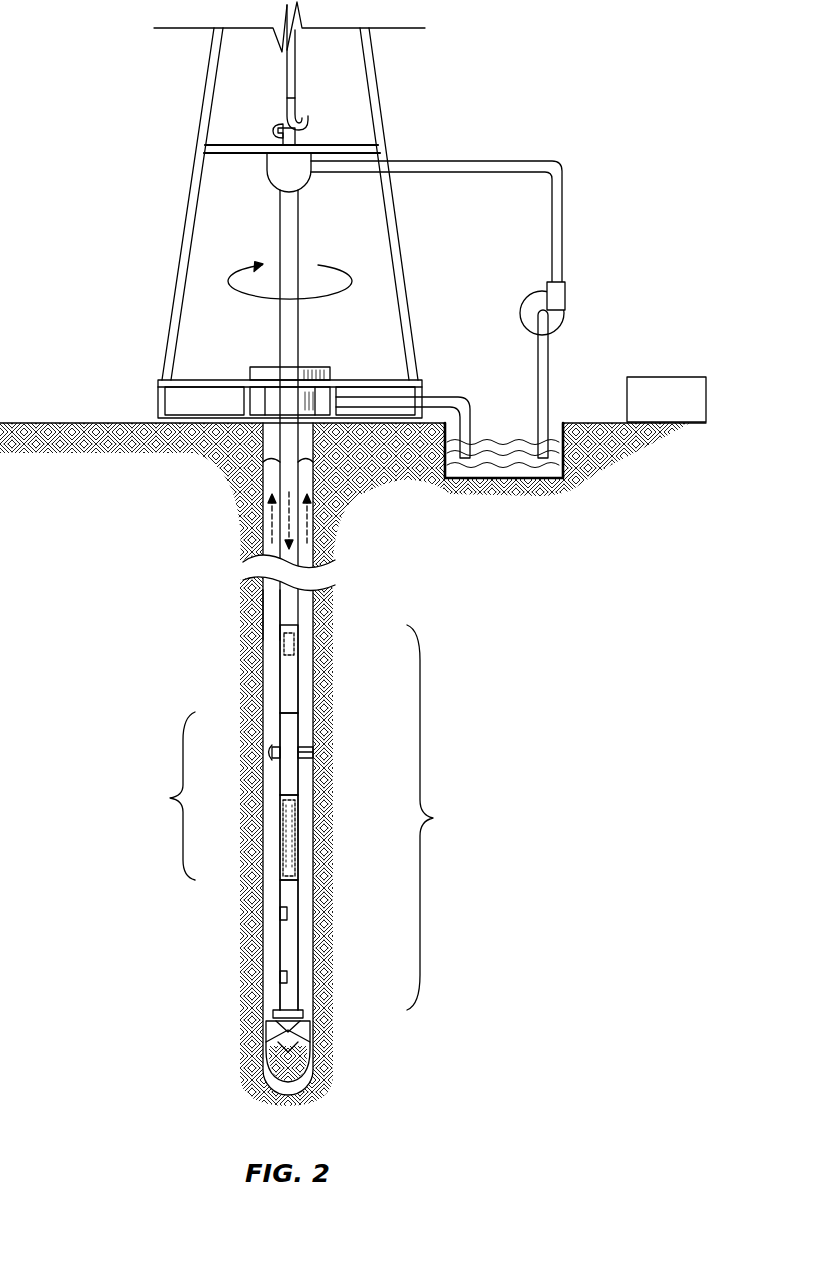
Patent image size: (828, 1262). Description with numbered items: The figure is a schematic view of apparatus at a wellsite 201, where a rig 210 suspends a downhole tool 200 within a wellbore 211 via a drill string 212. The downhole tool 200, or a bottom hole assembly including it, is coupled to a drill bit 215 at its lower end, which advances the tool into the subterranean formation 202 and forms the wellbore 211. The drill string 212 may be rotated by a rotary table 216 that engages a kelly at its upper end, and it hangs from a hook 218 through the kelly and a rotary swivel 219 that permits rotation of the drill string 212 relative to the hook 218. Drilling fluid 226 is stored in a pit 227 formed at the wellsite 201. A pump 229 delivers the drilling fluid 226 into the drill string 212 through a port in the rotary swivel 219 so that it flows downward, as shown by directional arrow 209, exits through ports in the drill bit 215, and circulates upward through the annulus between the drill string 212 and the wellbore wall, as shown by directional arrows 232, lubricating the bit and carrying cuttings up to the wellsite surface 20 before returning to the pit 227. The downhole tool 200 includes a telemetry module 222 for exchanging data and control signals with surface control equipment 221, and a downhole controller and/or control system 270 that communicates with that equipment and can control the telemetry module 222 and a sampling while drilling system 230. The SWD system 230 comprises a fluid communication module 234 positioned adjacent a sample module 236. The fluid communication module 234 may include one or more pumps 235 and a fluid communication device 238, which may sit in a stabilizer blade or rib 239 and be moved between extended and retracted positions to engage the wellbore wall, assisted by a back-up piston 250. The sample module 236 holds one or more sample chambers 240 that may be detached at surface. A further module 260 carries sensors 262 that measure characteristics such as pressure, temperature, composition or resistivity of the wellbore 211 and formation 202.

The wellsite surface 20 is at (80, 421).
The wellsite 201 is at (443, 103).
The rig 210 is at (179, 223).
The hook 218 is at (308, 125).
The rotary swivel 219 is at (312, 184).
The rotary table 216 is at (268, 368).
The directional arrow 209 is at (290, 508).
The directional arrows 232 is at (270, 538).
The drilling fluid 226 is at (478, 443).
The pit 227 is at (556, 438).
The pump 229 is at (566, 295).
The surface control equipment 221 is at (684, 408).
The wellbore 211 is at (306, 566).
The drill string 212 is at (278, 588).
The subterranean formation 202 is at (332, 990).
The downhole tool 200 is at (302, 853).
The telemetry module 222 is at (280, 662).
The downhole controller and/or control system 270 is at (297, 646).
The stabilizer blade or rib 239 is at (302, 724).
The sampling while drilling system 230 is at (252, 796).
The pumps 235 is at (283, 780).
The fluid communication device 238 is at (312, 757).
The back-up piston 250 is at (267, 748).
The fluid communication module 234 is at (280, 790).
The sample module 236 is at (280, 840).
The sample chambers 240 is at (296, 858).
The module 260 is at (280, 890).
The sensors 262 is at (278, 915).
The drill bit 215 is at (305, 1042).